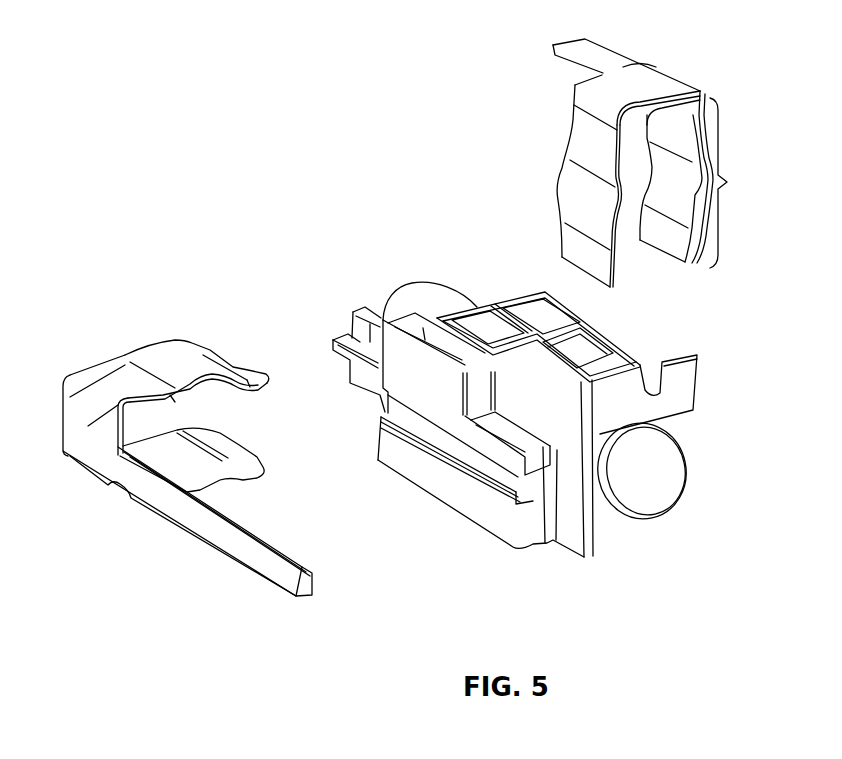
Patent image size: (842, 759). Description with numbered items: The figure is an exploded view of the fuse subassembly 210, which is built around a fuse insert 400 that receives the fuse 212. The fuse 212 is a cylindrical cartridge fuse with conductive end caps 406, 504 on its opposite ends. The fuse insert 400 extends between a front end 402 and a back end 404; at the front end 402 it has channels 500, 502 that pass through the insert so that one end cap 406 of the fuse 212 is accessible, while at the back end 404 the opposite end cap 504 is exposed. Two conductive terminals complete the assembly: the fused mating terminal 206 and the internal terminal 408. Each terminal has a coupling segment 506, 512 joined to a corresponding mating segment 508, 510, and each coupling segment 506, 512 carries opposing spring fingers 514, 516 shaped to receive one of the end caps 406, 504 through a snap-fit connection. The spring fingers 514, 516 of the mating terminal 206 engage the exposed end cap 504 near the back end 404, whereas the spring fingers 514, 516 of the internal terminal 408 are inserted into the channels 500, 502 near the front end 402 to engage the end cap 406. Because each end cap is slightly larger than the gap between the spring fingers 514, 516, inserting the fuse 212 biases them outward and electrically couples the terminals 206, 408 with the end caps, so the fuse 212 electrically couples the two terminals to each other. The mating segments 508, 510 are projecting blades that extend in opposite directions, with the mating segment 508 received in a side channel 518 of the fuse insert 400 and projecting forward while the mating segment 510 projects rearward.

The fused mating terminal 206 is at (106, 496).
The fuse subassembly 210 is at (50, 600).
The fuse 212 is at (659, 514).
The fuse insert 400 is at (697, 357).
The front end 402 is at (683, 393).
The back end 404 is at (510, 300).
The end cap 406 is at (668, 477).
The internal terminal 408 is at (570, 87).
The channel 500 is at (647, 347).
The channel 502 is at (591, 366).
The end cap 504 is at (423, 297).
The coupling segment 506 is at (205, 321).
The mating segment 508 is at (42, 493).
The mating segment 510 is at (592, 33).
The coupling segment 512 is at (740, 183).
The spring finger 514 is at (667, 248).
The spring finger 516 is at (568, 193).
The side channel 518 is at (488, 466).